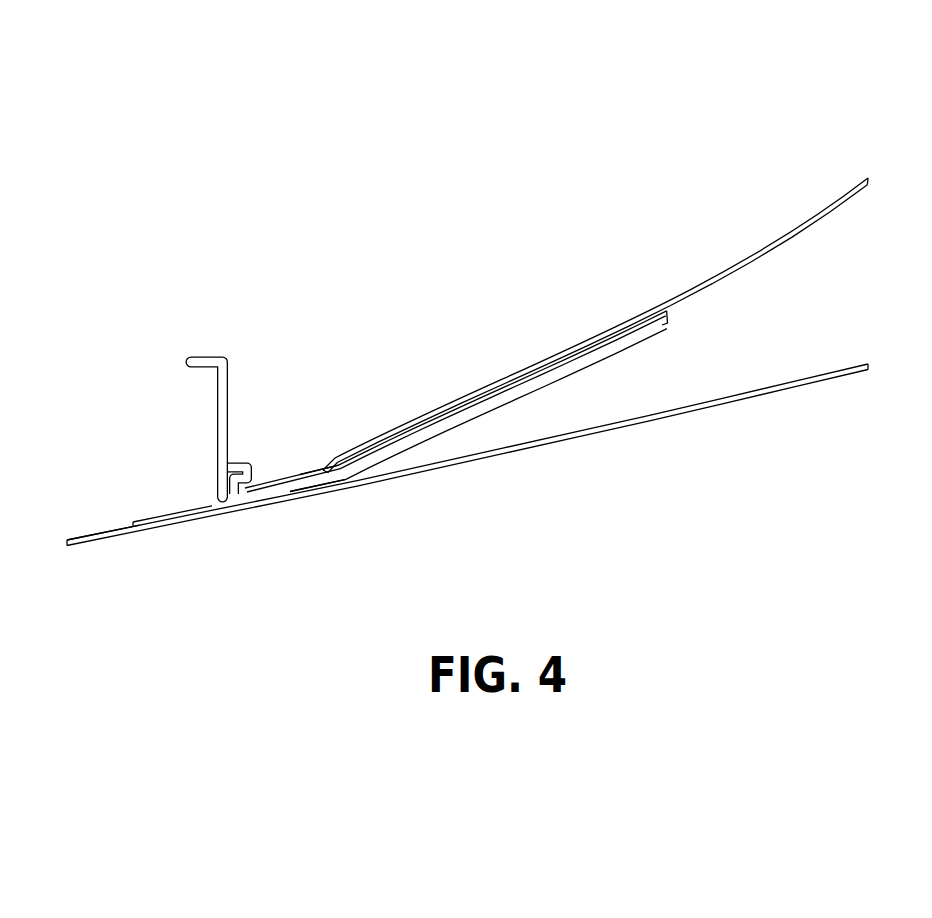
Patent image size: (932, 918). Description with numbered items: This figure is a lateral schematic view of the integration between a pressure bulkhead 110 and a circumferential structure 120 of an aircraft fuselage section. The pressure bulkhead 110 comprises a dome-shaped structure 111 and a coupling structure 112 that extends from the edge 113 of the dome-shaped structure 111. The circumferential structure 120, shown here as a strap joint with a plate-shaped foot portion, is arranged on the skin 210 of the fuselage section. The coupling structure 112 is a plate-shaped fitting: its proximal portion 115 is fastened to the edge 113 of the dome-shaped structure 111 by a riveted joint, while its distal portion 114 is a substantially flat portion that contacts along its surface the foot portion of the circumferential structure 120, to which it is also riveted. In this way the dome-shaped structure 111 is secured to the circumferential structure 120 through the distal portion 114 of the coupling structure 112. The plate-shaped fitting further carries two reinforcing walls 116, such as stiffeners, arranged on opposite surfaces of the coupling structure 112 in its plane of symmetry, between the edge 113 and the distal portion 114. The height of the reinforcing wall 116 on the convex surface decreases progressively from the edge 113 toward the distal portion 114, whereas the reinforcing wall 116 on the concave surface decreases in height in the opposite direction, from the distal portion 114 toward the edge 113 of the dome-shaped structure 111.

The pressure bulkhead 110 is at (800, 155).
The dome-shaped structure 111 is at (728, 267).
The coupling structure 112 is at (517, 387).
The edge 113 is at (607, 322).
The distal portion 114 is at (308, 488).
The proximal portion 115 is at (670, 316).
The reinforcing wall 116 is at (333, 457).
The circumferential structure 120 is at (128, 533).
The skin 210 is at (732, 405).